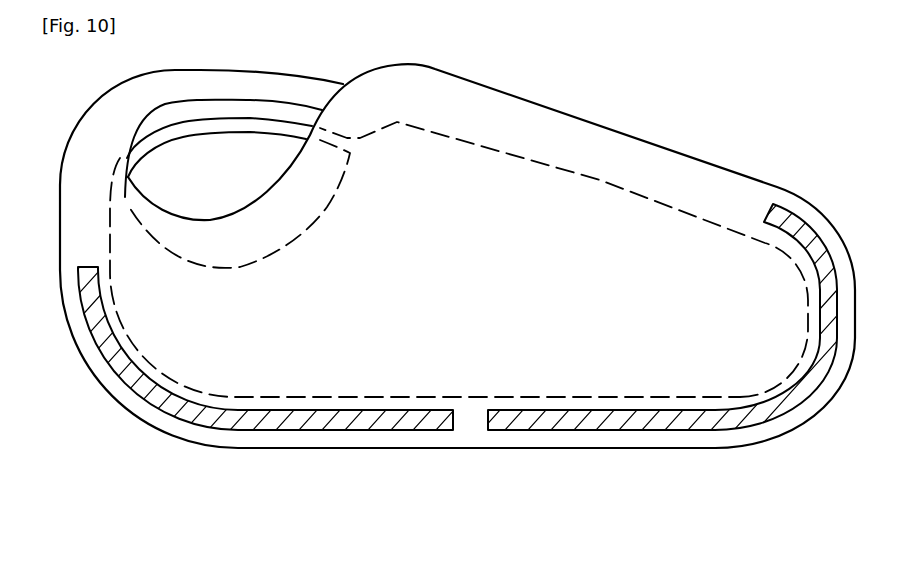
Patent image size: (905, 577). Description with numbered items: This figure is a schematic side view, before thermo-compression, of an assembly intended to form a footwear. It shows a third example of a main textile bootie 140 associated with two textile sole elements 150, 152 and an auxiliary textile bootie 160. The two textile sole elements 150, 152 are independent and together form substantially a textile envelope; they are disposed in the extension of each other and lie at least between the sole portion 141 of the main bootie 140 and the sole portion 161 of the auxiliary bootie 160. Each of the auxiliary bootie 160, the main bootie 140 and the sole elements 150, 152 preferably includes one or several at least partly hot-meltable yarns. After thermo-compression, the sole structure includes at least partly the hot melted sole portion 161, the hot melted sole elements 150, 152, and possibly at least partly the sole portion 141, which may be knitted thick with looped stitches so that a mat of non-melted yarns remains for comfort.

The main textile bootie 140 is at (459, 227).
The sole portion of the main bootie 141 is at (333, 397).
The textile sole element 150 is at (298, 425).
The textile sole element 152 is at (530, 422).
The auxiliary textile bootie 160 is at (457, 293).
The sole portion of the auxiliary bootie 161 is at (598, 446).